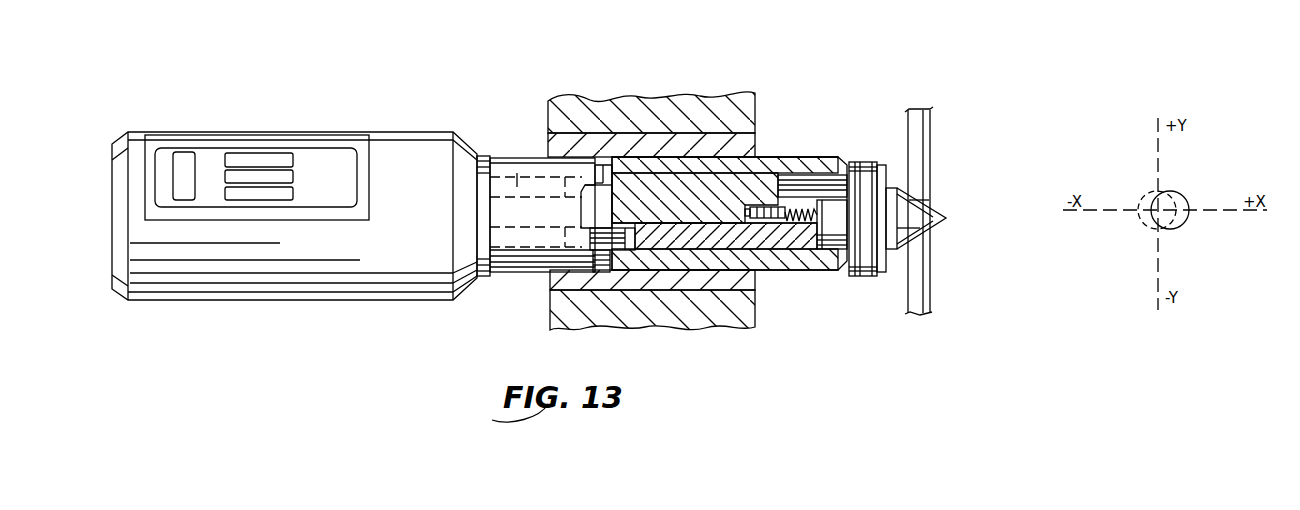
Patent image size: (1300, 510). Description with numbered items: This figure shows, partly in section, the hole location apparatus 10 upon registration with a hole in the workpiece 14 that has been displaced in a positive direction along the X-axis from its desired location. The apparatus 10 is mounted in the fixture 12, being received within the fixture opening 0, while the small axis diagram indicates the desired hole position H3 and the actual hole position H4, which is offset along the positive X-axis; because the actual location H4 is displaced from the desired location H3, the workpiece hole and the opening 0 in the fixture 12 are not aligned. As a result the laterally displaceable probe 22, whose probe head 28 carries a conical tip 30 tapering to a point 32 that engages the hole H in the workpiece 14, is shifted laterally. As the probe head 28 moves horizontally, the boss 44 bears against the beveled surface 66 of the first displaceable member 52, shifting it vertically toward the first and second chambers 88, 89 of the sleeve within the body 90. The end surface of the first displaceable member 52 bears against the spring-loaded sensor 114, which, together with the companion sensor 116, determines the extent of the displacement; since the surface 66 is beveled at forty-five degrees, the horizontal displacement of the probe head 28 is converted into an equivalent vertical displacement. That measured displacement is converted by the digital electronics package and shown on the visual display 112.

The hole location apparatus 10 is at (402, 100).
The visual display 112 is at (185, 168).
The sensor 116 is at (517, 158).
The second chamber 89 is at (600, 187).
The housing 90 is at (690, 197).
The first displaceable member 52 is at (802, 243).
The spring-loaded sensor 114 is at (622, 253).
The first chamber 88 is at (793, 193).
The boss 44 is at (830, 215).
The fixture 12 is at (757, 137).
The opening 0 is at (767, 155).
The beveled surface 66 is at (805, 248).
The probe head 28 is at (855, 279).
The laterally displaceable probe 22 is at (876, 281).
The point 32 is at (947, 218).
The conical tip 30 is at (937, 227).
The workpiece 14 is at (927, 132).
The hole H is at (928, 200).
The desired hole position H3 is at (1150, 197).
The actual hole position H4 is at (1185, 193).